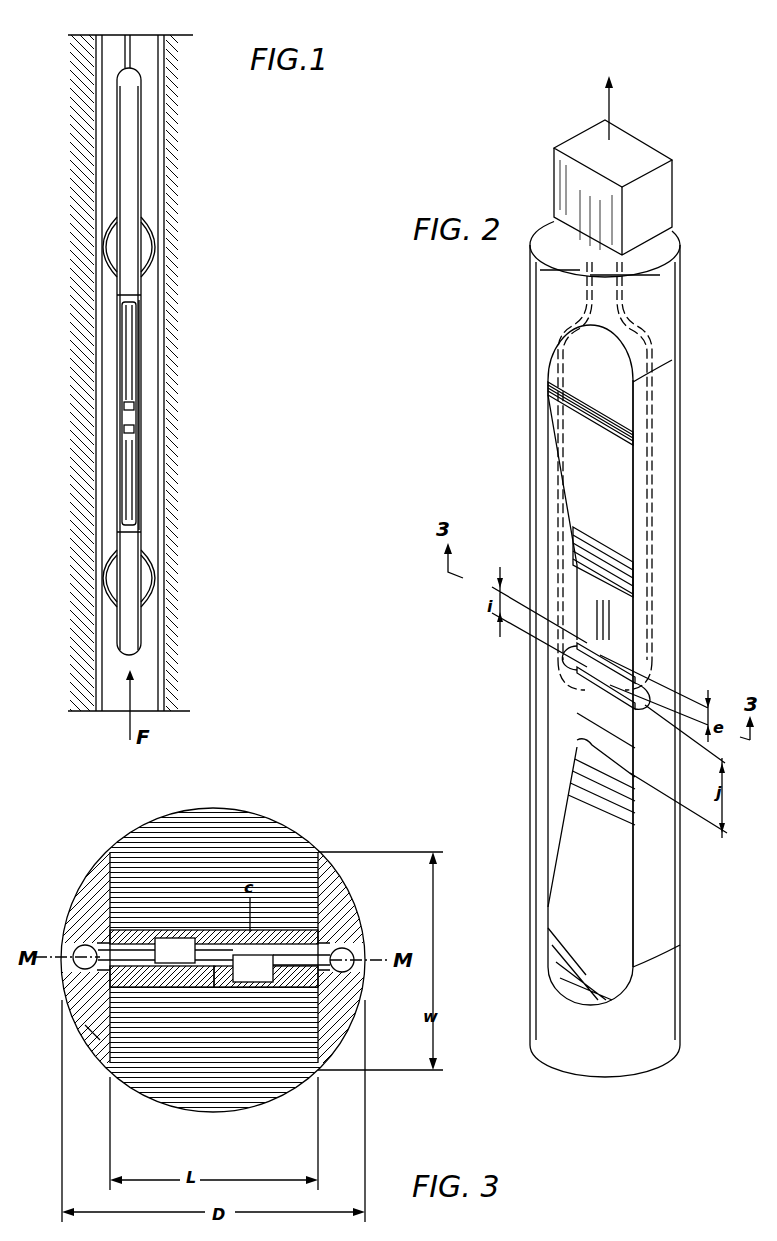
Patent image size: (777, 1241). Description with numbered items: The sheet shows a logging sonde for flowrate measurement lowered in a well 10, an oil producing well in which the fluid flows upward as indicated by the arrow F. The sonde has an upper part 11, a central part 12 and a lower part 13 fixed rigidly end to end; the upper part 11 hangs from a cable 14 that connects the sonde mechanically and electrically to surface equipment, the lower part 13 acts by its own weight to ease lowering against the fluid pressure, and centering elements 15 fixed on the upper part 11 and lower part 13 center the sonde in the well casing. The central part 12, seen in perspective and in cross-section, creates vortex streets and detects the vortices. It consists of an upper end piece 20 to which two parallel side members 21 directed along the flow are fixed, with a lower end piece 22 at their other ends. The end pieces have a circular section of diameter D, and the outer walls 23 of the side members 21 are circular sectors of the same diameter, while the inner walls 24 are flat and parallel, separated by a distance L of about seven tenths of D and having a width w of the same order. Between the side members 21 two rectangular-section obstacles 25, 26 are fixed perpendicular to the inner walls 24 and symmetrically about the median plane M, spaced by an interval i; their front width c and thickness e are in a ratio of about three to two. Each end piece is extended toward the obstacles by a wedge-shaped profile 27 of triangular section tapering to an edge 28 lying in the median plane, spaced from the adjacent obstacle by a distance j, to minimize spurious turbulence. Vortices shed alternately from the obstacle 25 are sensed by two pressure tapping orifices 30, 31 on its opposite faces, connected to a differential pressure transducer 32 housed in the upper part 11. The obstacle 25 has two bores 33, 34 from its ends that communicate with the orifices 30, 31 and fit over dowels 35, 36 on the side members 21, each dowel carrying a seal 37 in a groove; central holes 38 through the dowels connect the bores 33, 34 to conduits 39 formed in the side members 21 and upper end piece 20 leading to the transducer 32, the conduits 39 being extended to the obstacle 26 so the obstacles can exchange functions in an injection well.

In FIG. 1, the well 10 is at (168, 480).
In FIG. 1, the upper part 11 is at (132, 135).
In FIG. 1, the central part 12 is at (142, 397).
In FIG. 2, the central part 12 is at (530, 535).
In FIG. 1, the lower part 13 is at (132, 627).
In FIG. 1, the cable 14 is at (132, 52).
In FIG. 1, the centering elements 15 is at (143, 228).
In FIG. 2, the upper end piece 20 is at (663, 300).
In FIG. 1, the side members 21 is at (143, 315).
In FIG. 2, the side members 21 is at (533, 497).
In FIG. 3, the side members 21 is at (95, 880).
In FIG. 2, the lower end piece 22 is at (660, 1010).
In FIG. 3, the outer walls 23 is at (70, 908).
In FIG. 3, the inner walls 24 is at (120, 852).
In FIG. 1, the obstacle 25 is at (130, 407).
In FIG. 2, the obstacle 25 is at (580, 655).
In FIG. 3, the obstacle 25 is at (290, 937).
In FIG. 1, the obstacle 26 is at (135, 433).
In FIG. 2, the obstacle 26 is at (580, 685).
In FIG. 1, the wedge-shaped profile 27 is at (132, 360).
In FIG. 2, the wedge-shaped profile 27 is at (577, 413).
In FIG. 3, the wedge-shaped profile 27 is at (178, 822).
In FIG. 2, the edge 28 is at (590, 740).
In FIG. 3, the pressure tapping orifice 30 is at (212, 937).
In FIG. 3, the pressure tapping orifice 31 is at (213, 988).
In FIG. 2, the differential pressure transducer 32 is at (655, 195).
In FIG. 3, the bore 33 is at (173, 940).
In FIG. 3, the bore 34 is at (268, 985).
In FIG. 3, the dowel 35 is at (85, 1025).
In FIG. 3, the dowel 36 is at (303, 988).
In FIG. 3, the seal 37 is at (128, 968).
In FIG. 3, the central hole 38 is at (133, 935).
In FIG. 2, the conduit 39 is at (657, 410).
In FIG. 3, the conduit 39 is at (355, 955).